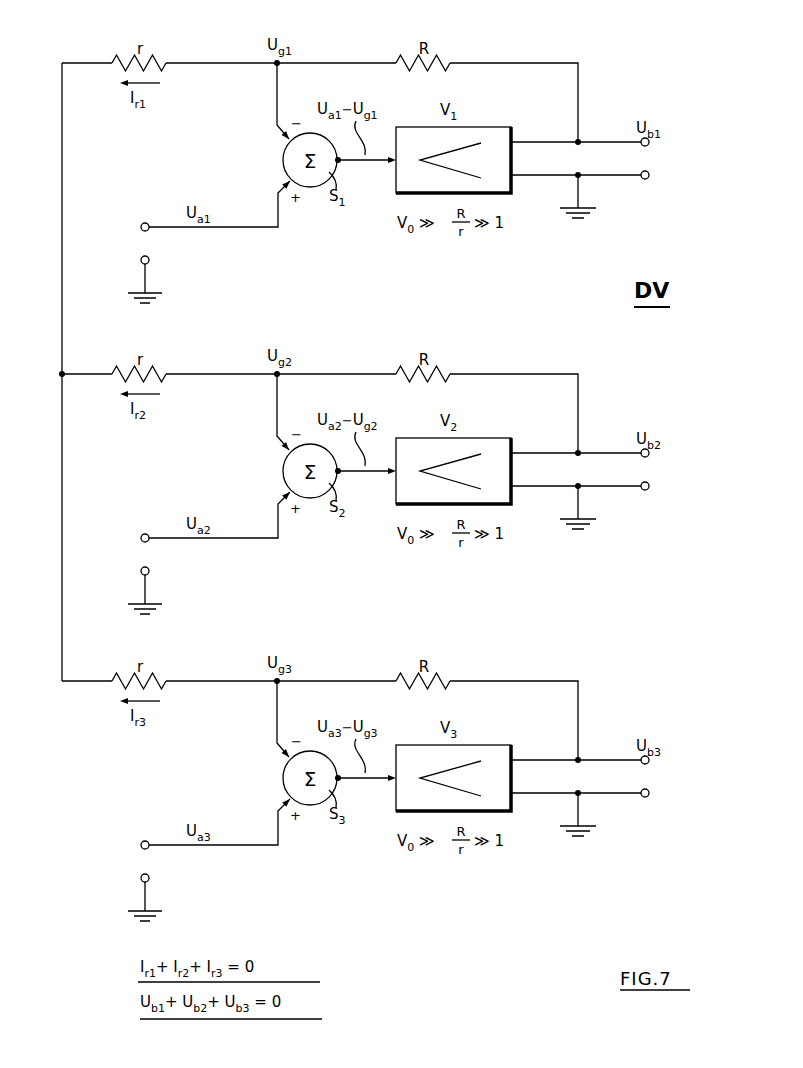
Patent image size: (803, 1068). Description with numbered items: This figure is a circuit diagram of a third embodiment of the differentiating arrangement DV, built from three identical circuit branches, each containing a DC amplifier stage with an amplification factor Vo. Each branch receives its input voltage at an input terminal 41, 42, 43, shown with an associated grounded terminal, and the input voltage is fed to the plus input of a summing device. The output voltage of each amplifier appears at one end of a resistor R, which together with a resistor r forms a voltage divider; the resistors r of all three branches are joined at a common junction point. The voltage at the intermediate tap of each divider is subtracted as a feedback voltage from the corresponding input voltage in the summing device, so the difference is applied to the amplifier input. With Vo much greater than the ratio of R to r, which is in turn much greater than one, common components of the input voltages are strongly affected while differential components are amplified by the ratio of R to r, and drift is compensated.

The input terminal of first channel 41 is at (209, 242).
The input terminal of second channel 42 is at (209, 553).
The input terminal of third channel 43 is at (209, 860).